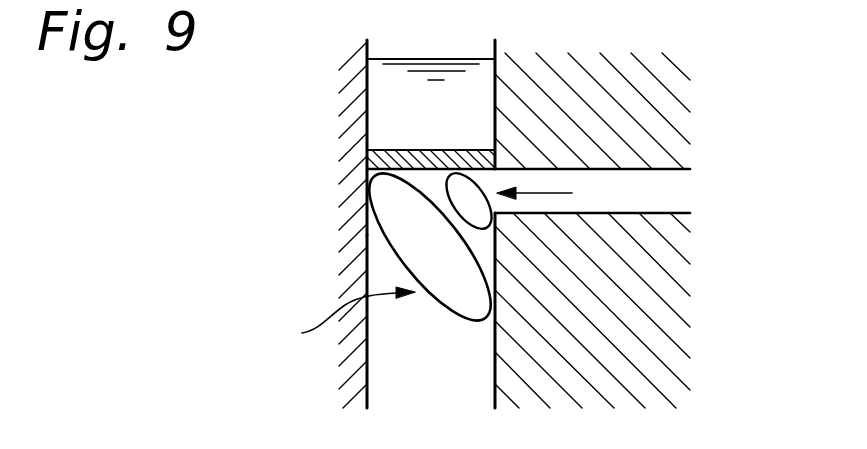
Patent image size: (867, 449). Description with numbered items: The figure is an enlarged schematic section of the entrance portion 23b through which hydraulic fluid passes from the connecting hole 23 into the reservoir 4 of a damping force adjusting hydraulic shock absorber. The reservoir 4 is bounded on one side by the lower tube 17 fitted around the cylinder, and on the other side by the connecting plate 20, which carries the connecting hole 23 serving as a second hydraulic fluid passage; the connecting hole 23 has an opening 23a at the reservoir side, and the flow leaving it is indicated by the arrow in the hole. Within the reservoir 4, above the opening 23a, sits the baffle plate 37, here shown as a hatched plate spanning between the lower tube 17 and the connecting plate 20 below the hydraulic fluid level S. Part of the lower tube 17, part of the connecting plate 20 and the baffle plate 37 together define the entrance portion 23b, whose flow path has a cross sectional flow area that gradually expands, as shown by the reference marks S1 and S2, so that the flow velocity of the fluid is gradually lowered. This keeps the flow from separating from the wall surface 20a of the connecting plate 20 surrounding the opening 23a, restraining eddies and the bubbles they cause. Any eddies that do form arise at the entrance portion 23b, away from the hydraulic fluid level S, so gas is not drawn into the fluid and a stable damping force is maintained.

The reservoir 4 is at (387, 387).
The lower tube 17 is at (358, 63).
The connecting plate 20 is at (657, 92).
The wall surface 20a is at (490, 238).
The connecting hole 23 is at (663, 213).
The opening 23a is at (480, 149).
The entrance portion 23b is at (333, 318).
The baffle plate 37 is at (403, 150).
The hydraulic fluid level S is at (395, 58).
The cross sectional flow area S1 is at (463, 191).
The cross sectional flow area S2 is at (410, 248).